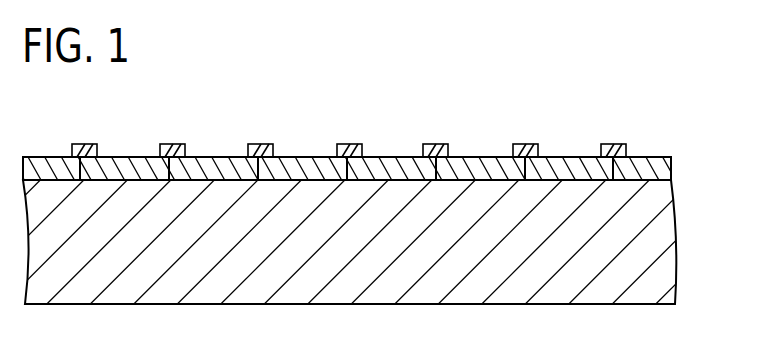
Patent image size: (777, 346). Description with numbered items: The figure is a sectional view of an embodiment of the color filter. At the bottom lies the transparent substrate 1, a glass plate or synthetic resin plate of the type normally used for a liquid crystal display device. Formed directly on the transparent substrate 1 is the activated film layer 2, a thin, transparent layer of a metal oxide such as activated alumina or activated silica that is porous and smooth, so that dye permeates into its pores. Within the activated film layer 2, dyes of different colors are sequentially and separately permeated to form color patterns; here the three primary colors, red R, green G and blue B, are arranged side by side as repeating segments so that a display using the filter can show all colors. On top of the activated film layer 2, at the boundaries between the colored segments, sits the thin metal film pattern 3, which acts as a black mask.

The transparent substrate 1 is at (660, 217).
The activated film layer 2 is at (664, 171).
The thin metal film pattern 3 is at (526, 143).
The blue color pattern B is at (50, 166).
The red color pattern R is at (136, 166).
The green color pattern G is at (222, 166).